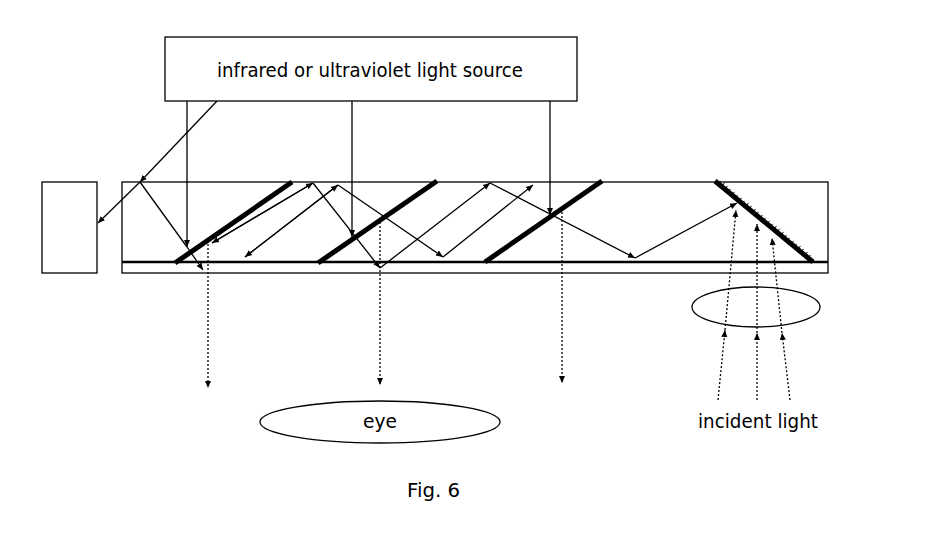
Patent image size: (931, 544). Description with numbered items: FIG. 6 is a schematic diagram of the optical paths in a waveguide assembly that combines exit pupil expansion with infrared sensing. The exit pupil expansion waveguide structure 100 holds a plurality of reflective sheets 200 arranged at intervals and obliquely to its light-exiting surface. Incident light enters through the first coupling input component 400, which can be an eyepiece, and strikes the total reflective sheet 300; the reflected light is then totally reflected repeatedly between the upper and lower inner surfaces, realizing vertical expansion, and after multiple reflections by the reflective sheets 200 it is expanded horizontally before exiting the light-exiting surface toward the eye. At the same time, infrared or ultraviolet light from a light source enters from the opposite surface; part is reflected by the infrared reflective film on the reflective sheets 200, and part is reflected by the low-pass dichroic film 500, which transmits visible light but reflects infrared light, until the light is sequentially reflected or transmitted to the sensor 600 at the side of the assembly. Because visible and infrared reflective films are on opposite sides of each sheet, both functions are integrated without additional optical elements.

The exit pupil expansion waveguide structure 100 is at (685, 182).
The reflective sheets 200 is at (508, 250).
The total reflective sheet 300 is at (758, 222).
The first coupling input component 400 is at (692, 307).
The low-pass dichroic film 500 is at (292, 273).
The sensor 600 is at (69, 227).